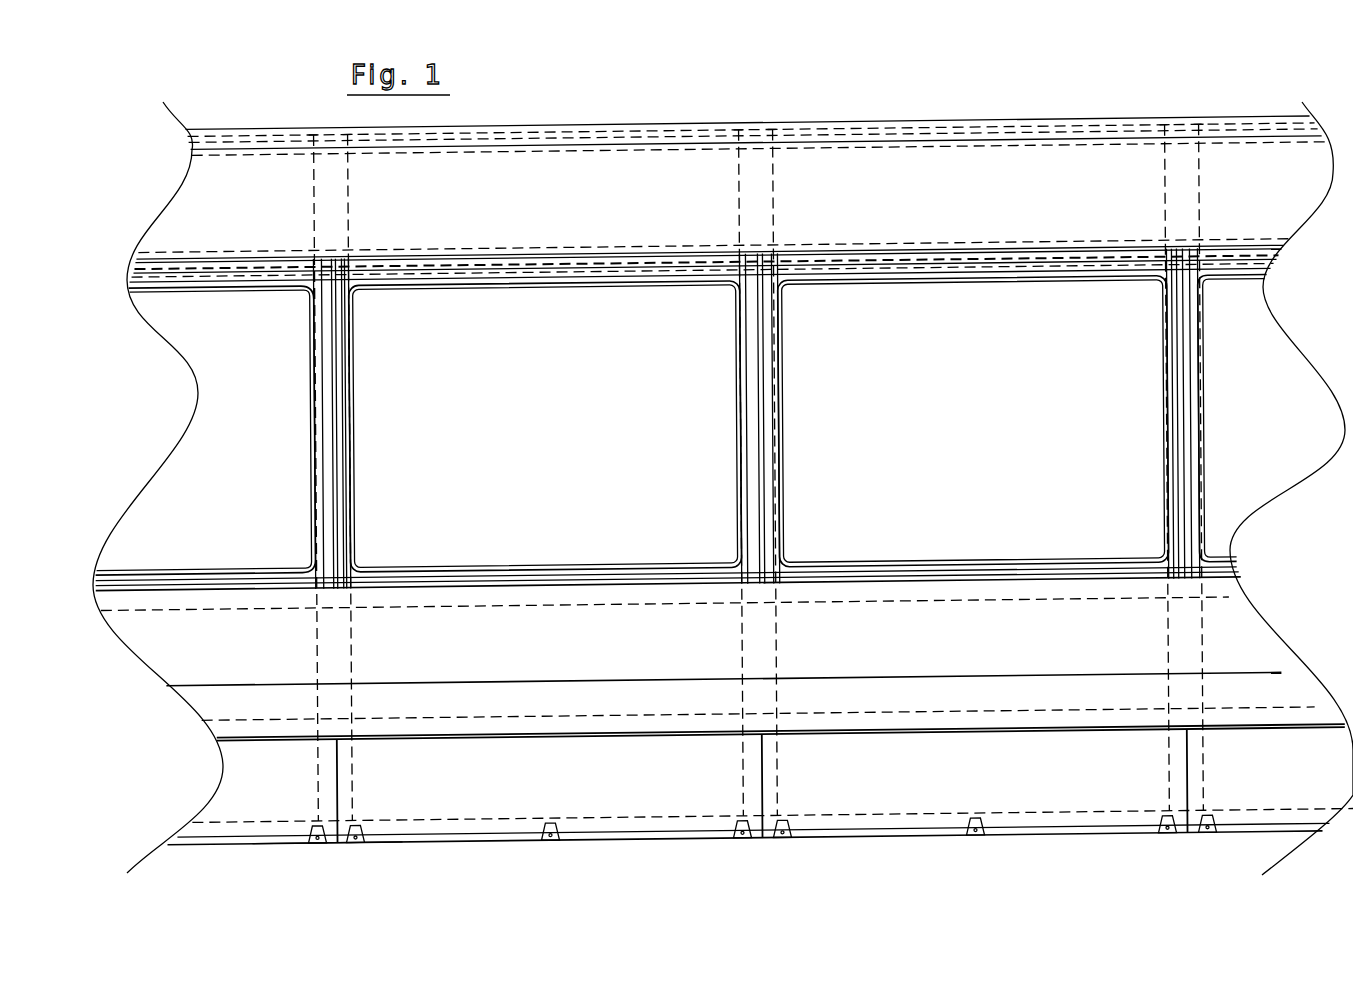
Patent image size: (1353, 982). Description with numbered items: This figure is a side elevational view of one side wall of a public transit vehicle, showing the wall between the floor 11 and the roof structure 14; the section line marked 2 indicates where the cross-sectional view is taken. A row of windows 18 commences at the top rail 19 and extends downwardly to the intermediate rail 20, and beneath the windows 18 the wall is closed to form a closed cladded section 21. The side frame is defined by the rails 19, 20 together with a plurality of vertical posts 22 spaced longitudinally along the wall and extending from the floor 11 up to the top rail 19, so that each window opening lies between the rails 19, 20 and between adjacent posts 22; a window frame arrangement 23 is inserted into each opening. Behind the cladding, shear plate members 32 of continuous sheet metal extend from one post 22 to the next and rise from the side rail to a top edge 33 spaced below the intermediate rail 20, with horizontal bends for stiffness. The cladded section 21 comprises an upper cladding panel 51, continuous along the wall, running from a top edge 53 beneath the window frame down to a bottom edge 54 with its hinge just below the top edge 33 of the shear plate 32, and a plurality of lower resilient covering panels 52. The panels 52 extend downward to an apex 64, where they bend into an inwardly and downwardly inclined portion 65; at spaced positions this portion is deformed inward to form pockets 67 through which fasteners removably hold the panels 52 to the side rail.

The floor 11 is at (323, 857).
The roof structure 14 is at (578, 125).
The windows 18 is at (512, 400).
The top rail 19 is at (547, 262).
The intermediate rail 20 is at (515, 567).
The closed cladded section 21 is at (466, 676).
The vertical posts 22 is at (318, 647).
The window frame arrangement 23 is at (352, 327).
The shear plate members 32 is at (413, 754).
The top edge of the shear plate 33 is at (1068, 707).
The upper cladding panel 51 is at (628, 590).
The lower resilient covering panels 52 is at (218, 812).
The top edge 53 is at (762, 577).
The bottom edge 54 is at (832, 730).
The apex 64 is at (235, 840).
The inclined portion 65 is at (298, 832).
The pocket 67 is at (373, 827).
The section line 2- 2 is at (590, 657).